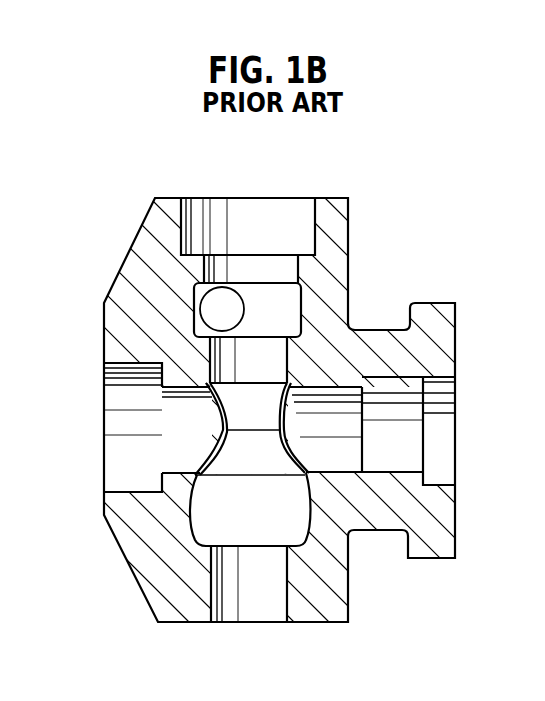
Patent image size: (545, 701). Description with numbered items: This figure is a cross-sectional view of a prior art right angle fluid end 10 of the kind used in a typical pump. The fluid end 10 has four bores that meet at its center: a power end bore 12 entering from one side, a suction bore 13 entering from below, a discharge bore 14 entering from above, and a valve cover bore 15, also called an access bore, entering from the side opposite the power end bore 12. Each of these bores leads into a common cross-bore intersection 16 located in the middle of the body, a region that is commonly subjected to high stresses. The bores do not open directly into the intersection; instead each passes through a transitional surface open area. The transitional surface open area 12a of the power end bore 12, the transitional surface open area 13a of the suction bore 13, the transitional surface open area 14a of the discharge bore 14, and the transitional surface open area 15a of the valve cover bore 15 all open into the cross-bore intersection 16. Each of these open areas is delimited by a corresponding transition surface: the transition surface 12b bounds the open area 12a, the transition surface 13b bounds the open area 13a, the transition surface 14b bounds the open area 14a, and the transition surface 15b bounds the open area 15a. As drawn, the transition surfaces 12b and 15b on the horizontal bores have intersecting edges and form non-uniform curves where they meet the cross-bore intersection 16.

The fluid end 10 is at (377, 192).
The power end bore 12 is at (375, 441).
The transitional surface open area 12a is at (292, 444).
The transition surface 12b is at (343, 467).
The suction bore 13 is at (250, 538).
The transitional surface open area 13a is at (190, 471).
The transition surface 13b is at (207, 482).
The discharge bore 14 is at (269, 226).
The transitional surface open area 14a is at (250, 378).
The transition surface 14b is at (233, 380).
The valve cover bore 15 is at (207, 440).
The transitional surface open area 15a is at (207, 459).
The transition surface 15b is at (213, 392).
The cross-bore intersection 16 is at (255, 406).